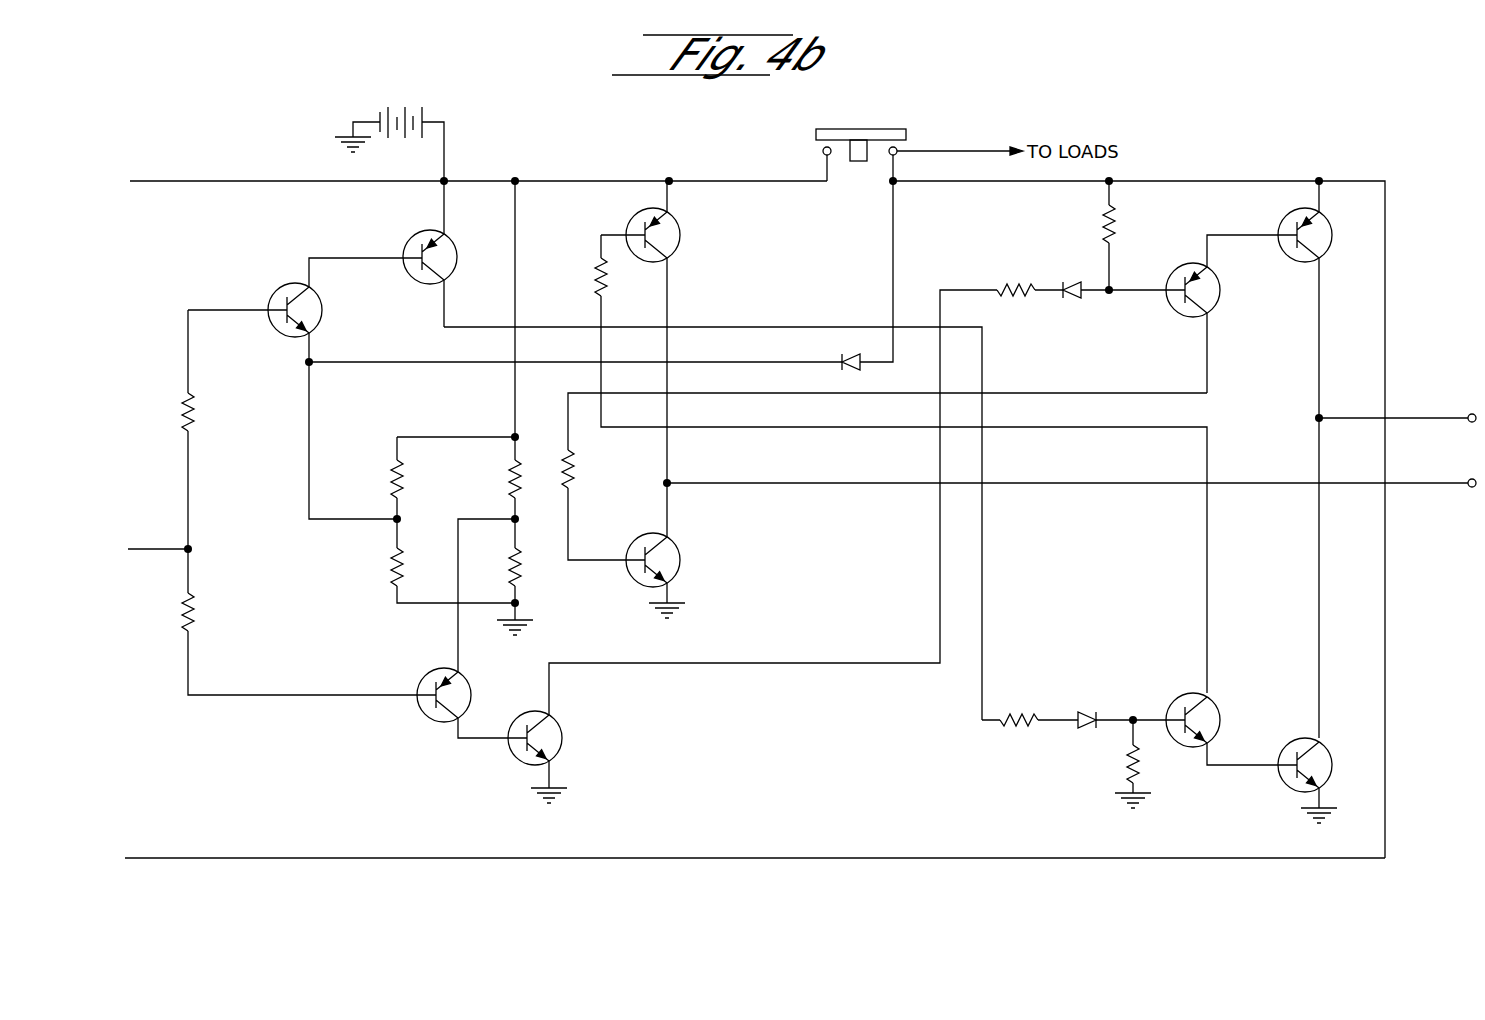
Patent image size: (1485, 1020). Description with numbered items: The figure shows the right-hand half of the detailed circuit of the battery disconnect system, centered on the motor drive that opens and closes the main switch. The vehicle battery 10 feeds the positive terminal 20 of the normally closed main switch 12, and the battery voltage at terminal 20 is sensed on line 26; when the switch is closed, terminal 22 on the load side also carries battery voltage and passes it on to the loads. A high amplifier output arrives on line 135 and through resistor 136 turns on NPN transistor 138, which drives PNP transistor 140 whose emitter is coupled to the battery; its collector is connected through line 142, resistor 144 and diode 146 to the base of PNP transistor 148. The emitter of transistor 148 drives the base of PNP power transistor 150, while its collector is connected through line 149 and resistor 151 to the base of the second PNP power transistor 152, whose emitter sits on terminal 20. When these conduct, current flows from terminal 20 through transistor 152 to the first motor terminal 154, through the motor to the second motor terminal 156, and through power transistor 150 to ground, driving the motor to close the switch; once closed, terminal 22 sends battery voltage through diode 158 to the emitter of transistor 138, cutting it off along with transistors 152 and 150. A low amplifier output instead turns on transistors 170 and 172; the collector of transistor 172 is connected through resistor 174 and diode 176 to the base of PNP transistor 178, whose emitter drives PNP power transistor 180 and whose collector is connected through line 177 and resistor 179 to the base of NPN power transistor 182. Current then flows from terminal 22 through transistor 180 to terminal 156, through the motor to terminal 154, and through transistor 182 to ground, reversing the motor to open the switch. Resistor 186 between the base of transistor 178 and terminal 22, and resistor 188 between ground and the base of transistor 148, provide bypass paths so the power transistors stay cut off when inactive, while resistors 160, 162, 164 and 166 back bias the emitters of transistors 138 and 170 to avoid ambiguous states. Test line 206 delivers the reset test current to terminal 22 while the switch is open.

The vehicle battery 10 is at (419, 98).
The main switch 12 is at (838, 123).
The positive terminal 20 is at (823, 152).
The terminal 22 is at (897, 155).
The line 26 is at (226, 181).
The line 135 is at (153, 549).
The resistor 136 is at (185, 395).
The NPN transistor 138 is at (280, 287).
The PNP transistor 140 is at (418, 232).
The line 142 is at (750, 327).
The resistor 144 is at (1015, 728).
The diode 146 is at (1082, 708).
The PNP transistor 148 is at (1183, 698).
The line 149 is at (600, 290).
The PNP power transistor 150 is at (1290, 745).
The resistor 151 is at (598, 256).
The second PNP power transistor 152 is at (680, 222).
The first motor terminal 154 is at (1470, 488).
The second motor terminal 156 is at (1470, 415).
The diode 158 is at (843, 357).
The resistor 160 is at (392, 477).
The resistor 162 is at (392, 562).
The resistor 164 is at (512, 482).
The resistor 166 is at (518, 578).
The transistor 170 is at (425, 715).
The transistor 172 is at (560, 738).
The resistor 174 is at (1010, 286).
The diode 176 is at (1070, 298).
The line 177 is at (1086, 393).
The PNP transistor 178 is at (1185, 315).
The resistor 179 is at (578, 460).
The PNP power transistor 180 is at (1290, 258).
The NPN power transistor 182 is at (640, 538).
The resistor 186 is at (1105, 225).
The resistor 188 is at (1128, 760).
The test line 206 is at (290, 858).